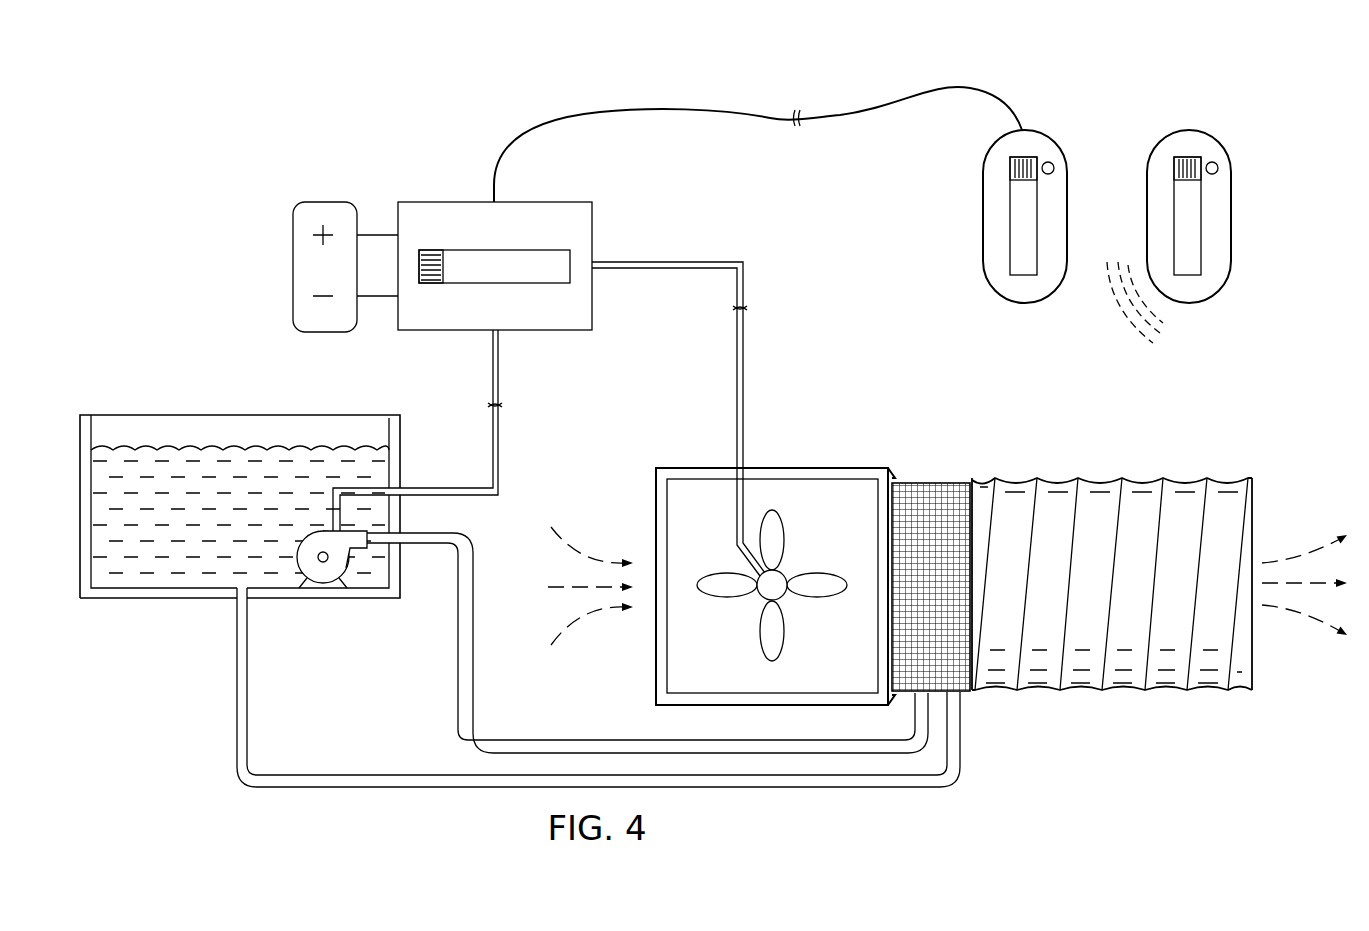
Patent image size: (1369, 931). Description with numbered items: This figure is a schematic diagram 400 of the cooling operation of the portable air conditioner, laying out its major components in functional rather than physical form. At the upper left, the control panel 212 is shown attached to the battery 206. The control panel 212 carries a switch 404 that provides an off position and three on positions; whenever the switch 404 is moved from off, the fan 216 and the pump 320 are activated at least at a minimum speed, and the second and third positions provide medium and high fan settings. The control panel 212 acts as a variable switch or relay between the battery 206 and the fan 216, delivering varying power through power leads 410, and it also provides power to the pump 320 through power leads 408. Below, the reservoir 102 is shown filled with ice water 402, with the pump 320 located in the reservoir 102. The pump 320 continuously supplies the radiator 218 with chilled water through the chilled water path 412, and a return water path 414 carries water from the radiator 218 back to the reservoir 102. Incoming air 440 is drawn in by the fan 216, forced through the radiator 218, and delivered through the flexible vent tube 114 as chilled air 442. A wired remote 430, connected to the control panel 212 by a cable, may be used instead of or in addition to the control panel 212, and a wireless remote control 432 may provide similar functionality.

The schematic diagram 400 is at (256, 95).
The reservoir 102 is at (240, 481).
The flexible vent tube 114 is at (1122, 692).
The battery 206 is at (292, 268).
The control panel 212 is at (463, 202).
The fan 216 is at (812, 573).
The radiator 218 is at (937, 480).
The pump 320 is at (320, 578).
The ice water 402 is at (240, 509).
The rotary switch 404 is at (443, 268).
The power leads 408 is at (503, 403).
The power leads 410 is at (748, 306).
The chilled water path 412 is at (458, 672).
The return water path 414 is at (237, 672).
The wired remote 430 is at (1038, 130).
The wireless remote control 432 is at (1205, 130).
The incoming air 440 is at (598, 638).
The chilled air 442 is at (1295, 626).